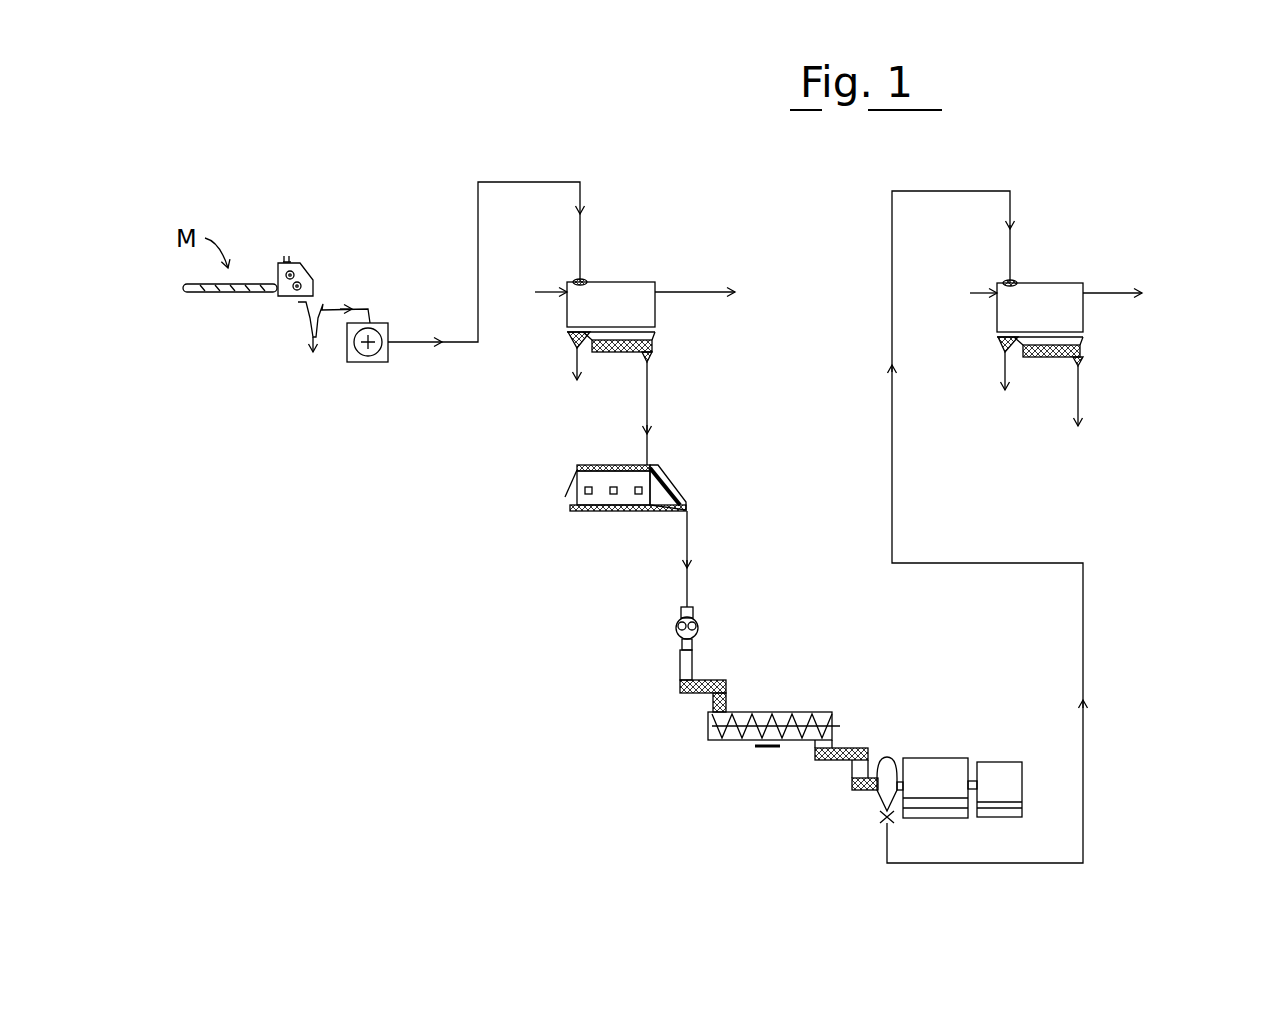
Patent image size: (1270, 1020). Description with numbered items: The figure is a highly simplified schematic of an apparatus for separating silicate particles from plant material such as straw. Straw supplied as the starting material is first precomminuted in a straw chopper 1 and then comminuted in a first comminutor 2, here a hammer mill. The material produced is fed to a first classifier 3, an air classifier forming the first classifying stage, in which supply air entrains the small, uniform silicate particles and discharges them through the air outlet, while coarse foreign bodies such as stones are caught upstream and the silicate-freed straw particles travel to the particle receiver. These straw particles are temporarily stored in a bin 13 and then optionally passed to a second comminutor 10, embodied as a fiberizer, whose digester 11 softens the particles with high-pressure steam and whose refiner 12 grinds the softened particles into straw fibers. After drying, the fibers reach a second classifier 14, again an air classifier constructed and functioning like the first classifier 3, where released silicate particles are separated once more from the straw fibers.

The straw chopper 1 is at (306, 256).
The first comminutor 2 is at (359, 397).
The first classifier 3 is at (669, 228).
The second comminutor 10 is at (719, 817).
The digester 11 is at (801, 700).
The refiner 12 is at (894, 750).
The bin 13 is at (571, 528).
The second classifier 14 is at (1119, 246).